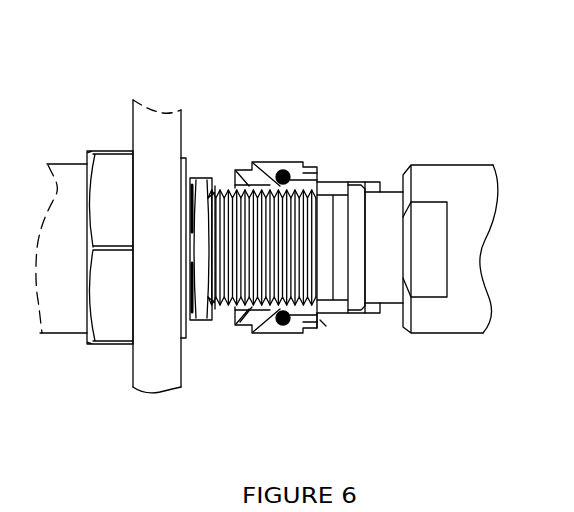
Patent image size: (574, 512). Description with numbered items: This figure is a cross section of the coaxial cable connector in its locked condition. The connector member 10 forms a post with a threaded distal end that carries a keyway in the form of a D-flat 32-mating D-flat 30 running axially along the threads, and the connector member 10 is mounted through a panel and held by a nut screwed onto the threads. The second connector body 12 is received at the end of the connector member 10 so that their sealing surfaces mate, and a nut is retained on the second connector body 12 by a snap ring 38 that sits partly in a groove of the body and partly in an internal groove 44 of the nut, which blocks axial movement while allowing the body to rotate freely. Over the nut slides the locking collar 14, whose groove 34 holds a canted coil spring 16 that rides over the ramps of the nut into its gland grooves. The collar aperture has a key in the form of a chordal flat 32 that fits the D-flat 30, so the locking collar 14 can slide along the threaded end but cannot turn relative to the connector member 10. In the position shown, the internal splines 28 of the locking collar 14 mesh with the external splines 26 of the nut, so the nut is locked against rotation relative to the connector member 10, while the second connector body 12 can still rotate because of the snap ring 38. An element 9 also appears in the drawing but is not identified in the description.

The fitting body 9 is at (356, 181).
The connector member 10 is at (222, 188).
The second connector body 12 is at (400, 177).
The locking collar 14 is at (265, 162).
The canted coil spring 16 is at (289, 171).
The external splines 26 is at (313, 176).
The internal splines 28 is at (312, 328).
The D-flat 30 is at (233, 323).
The chordal flat 32 is at (243, 318).
The groove 34 is at (285, 322).
The snap ring 38 is at (357, 282).
The internal groove 44 is at (358, 312).